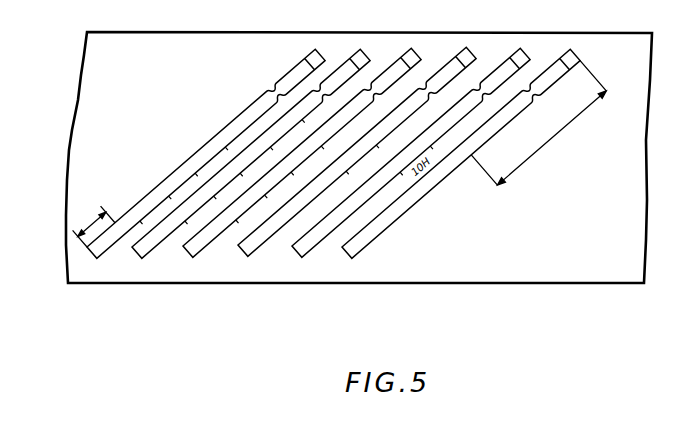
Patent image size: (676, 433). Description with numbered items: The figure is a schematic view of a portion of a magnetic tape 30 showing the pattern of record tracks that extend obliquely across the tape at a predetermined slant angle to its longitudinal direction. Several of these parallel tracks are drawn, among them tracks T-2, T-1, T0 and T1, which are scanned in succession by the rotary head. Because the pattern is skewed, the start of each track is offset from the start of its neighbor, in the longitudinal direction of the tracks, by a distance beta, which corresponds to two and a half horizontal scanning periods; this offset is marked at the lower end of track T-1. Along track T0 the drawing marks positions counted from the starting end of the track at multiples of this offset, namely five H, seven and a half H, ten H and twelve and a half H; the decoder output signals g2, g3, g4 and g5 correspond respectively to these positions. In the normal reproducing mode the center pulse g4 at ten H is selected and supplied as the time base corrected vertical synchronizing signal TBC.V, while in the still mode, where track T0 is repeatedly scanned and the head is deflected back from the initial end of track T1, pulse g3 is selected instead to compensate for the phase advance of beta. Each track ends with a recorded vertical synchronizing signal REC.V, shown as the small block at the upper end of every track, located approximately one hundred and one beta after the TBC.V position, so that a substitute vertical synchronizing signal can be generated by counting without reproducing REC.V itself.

The magnetic tape 30 is at (533, 272).
The record track T-1 is at (90, 262).
The record track T0 is at (132, 263).
The record track T1 is at (184, 262).
The record track T-2 is at (243, 262).
The output signal g2 is at (200, 213).
The output signal g3 is at (219, 197).
The output signal g4 is at (257, 162).
The output signal g5 is at (285, 135).
The recorded vertical synchronizing signal REC.V is at (320, 58).
The time base corrected vertical synchronizing signal TBC.V is at (210, 163).